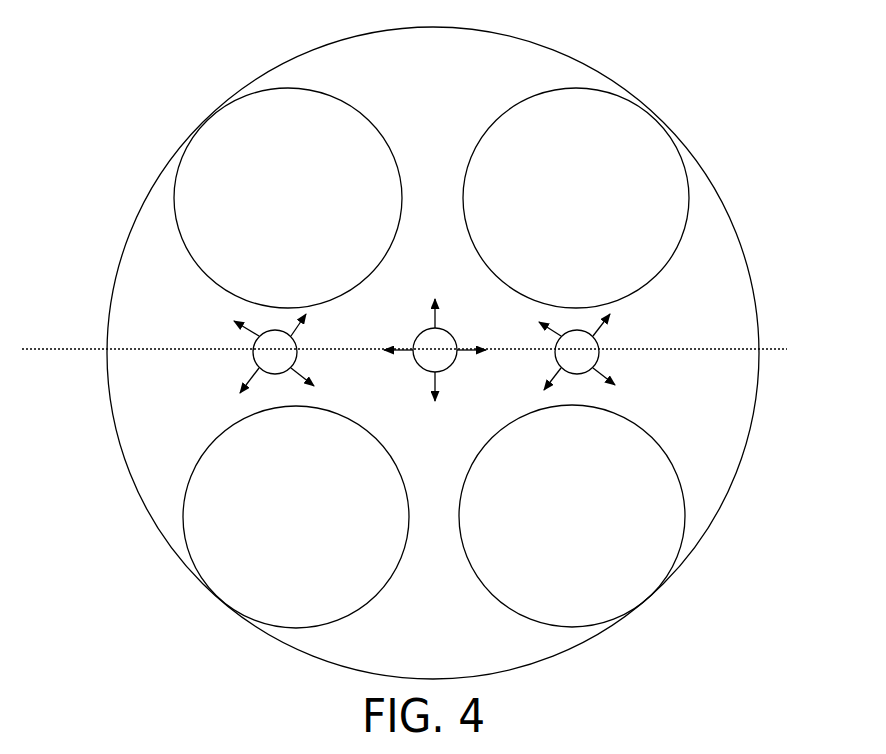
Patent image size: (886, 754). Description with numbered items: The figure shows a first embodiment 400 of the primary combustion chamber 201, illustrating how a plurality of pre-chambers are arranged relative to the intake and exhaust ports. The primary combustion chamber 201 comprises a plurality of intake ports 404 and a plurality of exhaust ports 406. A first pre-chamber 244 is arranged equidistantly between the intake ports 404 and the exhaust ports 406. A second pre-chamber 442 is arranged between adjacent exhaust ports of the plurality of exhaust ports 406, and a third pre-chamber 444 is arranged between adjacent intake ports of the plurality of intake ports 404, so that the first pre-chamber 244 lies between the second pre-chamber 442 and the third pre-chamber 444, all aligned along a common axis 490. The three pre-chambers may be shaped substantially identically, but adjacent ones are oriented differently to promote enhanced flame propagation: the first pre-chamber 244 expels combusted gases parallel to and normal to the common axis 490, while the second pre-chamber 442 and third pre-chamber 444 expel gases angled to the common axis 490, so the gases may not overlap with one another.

The first embodiment 400 is at (774, 40).
The primary combustion chamber 201 is at (283, 63).
The common axis 490 is at (76, 349).
The plurality of exhaust ports 406 is at (295, 198).
The plurality of intake ports 404 is at (599, 208).
The second pre-chamber 442 is at (253, 355).
The first pre-chamber 244 is at (414, 366).
The third pre-chamber 444 is at (598, 341).